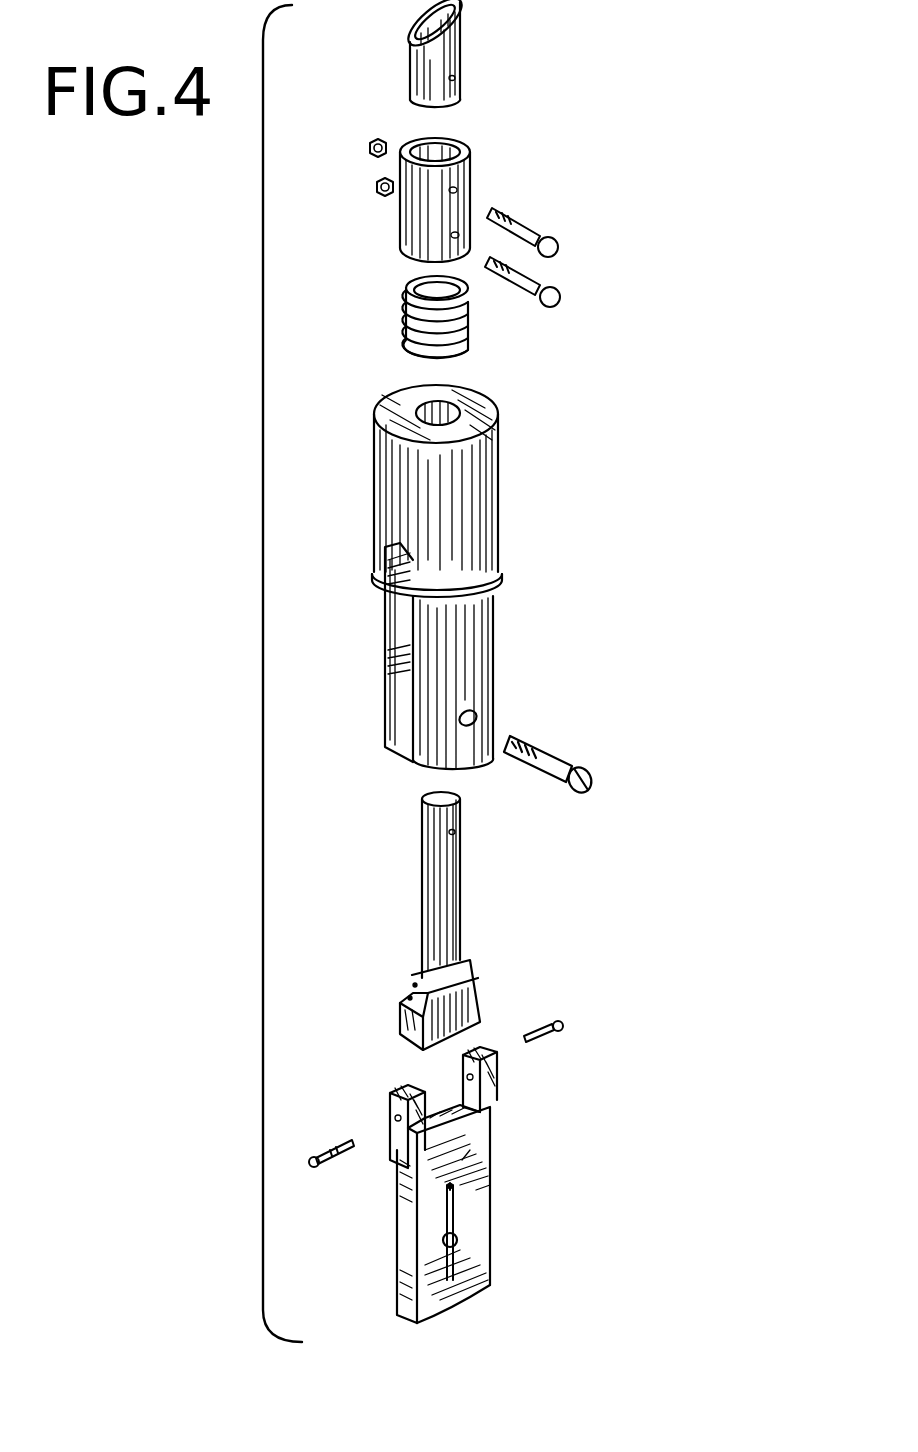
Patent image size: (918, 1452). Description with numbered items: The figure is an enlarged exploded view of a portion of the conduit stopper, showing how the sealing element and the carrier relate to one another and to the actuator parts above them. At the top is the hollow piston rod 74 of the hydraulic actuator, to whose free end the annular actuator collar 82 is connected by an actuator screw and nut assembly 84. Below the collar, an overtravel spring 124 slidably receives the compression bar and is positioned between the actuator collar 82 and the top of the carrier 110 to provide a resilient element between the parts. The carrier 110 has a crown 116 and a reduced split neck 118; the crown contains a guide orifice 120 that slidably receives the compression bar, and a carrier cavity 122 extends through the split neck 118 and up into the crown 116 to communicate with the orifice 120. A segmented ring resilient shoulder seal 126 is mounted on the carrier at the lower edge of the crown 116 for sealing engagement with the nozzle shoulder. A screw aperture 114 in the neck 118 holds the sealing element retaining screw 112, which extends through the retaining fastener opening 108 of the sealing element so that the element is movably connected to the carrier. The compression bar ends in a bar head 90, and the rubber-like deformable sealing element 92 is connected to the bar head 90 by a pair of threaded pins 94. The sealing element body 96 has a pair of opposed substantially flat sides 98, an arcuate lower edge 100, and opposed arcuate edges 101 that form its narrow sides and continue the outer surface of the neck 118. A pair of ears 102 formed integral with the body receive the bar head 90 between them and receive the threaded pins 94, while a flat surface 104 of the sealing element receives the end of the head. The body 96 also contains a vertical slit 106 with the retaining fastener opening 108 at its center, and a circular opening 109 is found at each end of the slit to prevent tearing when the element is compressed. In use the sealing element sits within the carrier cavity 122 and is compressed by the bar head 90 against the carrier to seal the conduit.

The hollow piston rod 74 is at (470, 60).
The actuator collar 82 is at (470, 165).
The actuator screw and nut assembly 84 is at (536, 236).
The overtravel spring 124 is at (408, 300).
The carrier 110 is at (431, 567).
The crown 116 is at (478, 492).
The reduced split neck 118 is at (470, 643).
The guide orifice 120 is at (448, 411).
The segmented ring resilient shoulder seal 126 is at (368, 568).
The carrier cavity 122 is at (400, 661).
The screw aperture 114 is at (475, 712).
The sealing element retaining screw 112 is at (564, 768).
The bar head 90 is at (480, 986).
The threaded pins 94 is at (565, 1028).
The ears 102 is at (472, 1050).
The sealing element 92 is at (446, 1231).
The flat surface 104 is at (492, 1113).
The hatched surfaces 109 is at (470, 1148).
The flat sides 98 is at (478, 1222).
The vertical slit 106 is at (456, 1250).
The body 96 is at (490, 1258).
The arcuate lower edge 100 is at (466, 1310).
The arcuate edges 101 is at (402, 1222).
The retaining fastener opening 108 is at (402, 1260).